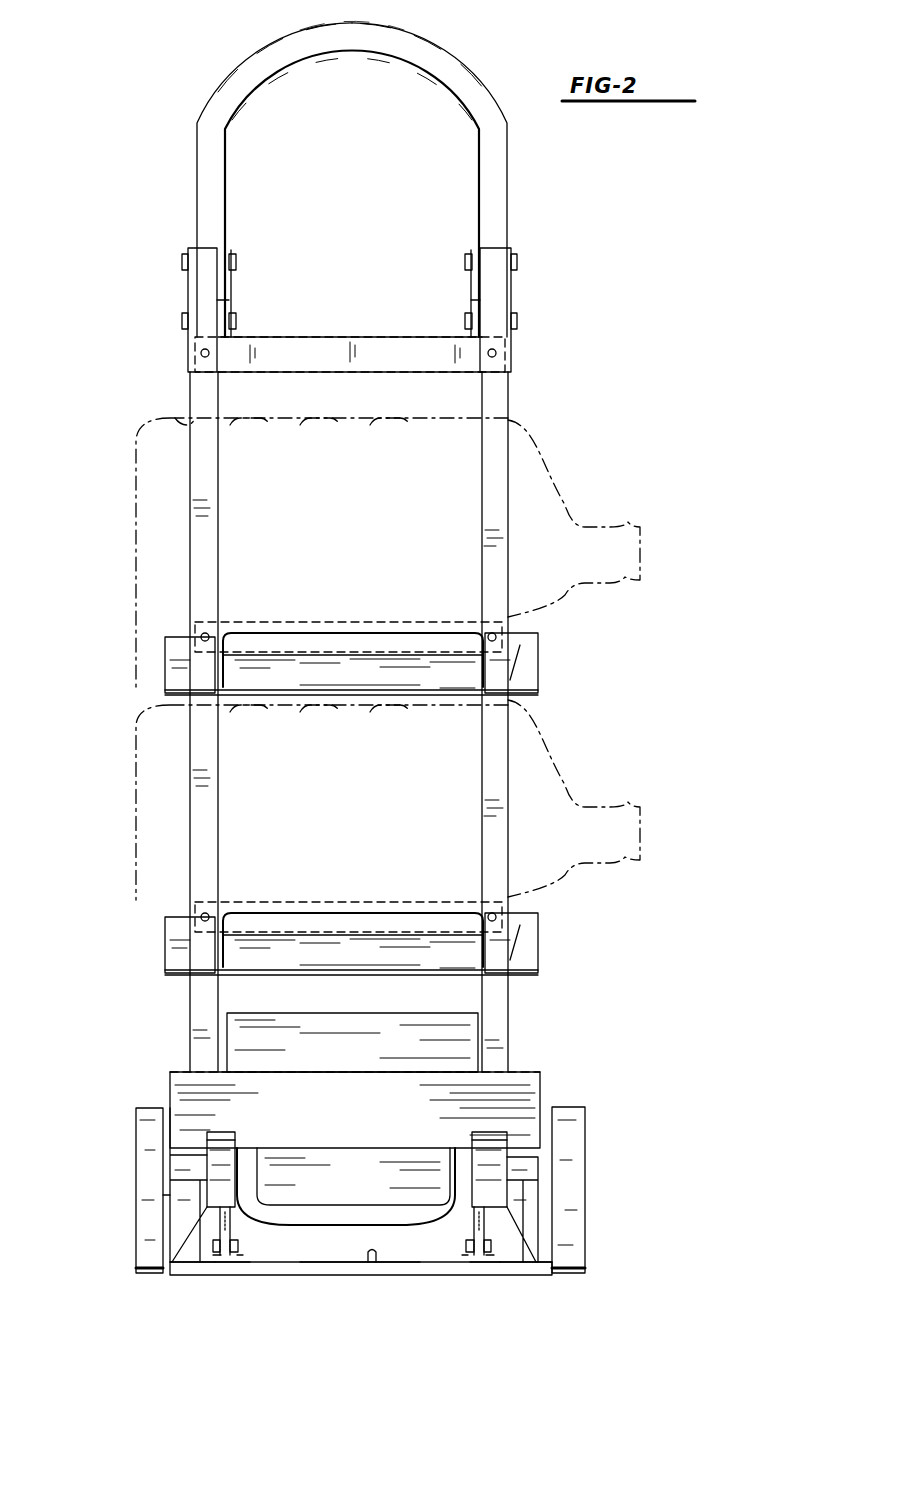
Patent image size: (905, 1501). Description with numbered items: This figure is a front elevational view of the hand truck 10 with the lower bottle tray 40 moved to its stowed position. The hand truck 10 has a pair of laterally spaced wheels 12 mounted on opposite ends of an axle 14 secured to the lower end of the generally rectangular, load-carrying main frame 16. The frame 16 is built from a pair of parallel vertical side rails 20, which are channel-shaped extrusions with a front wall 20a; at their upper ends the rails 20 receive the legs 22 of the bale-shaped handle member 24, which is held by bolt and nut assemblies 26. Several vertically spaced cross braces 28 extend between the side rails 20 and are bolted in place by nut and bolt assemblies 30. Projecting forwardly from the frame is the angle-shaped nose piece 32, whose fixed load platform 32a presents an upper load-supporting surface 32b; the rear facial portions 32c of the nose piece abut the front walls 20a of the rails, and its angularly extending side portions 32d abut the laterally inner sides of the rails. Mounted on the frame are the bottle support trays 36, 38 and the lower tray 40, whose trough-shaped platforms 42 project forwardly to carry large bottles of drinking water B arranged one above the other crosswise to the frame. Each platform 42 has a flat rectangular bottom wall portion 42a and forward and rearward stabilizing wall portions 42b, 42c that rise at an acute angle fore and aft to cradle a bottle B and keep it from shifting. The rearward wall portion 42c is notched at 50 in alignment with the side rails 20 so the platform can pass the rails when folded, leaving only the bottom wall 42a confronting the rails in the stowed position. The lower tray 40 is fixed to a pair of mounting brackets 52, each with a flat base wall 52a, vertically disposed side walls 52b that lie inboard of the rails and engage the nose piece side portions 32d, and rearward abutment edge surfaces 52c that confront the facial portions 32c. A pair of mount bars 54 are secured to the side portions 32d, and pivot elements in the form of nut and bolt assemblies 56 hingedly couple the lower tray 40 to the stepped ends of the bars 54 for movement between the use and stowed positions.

The hand truck 10 is at (147, 138).
The wheels 12 is at (140, 1265).
The axle 14 is at (160, 1195).
The main frame 16 is at (172, 268).
The side rails 20 is at (512, 275).
The front wall 20a is at (500, 328).
The legs 22 is at (222, 308).
The handle member 24 is at (407, 24).
The bolt and nut assemblies 26 is at (235, 262).
The cross braces 28 is at (348, 345).
The nut and bolt assemblies 30 is at (203, 356).
The nose piece 32 is at (290, 1280).
The load platform 32a is at (340, 1270).
The load-supporting surface 32b is at (372, 1262).
The rear facial portions 32c is at (170, 1280).
The side portions 32d is at (225, 1268).
The bottle support tray 36 is at (280, 630).
The bottle support tray 38 is at (280, 905).
The lower bottle tray 40 is at (175, 1085).
The platforms 42 is at (410, 640).
The bottom wall portion 42a is at (330, 690).
The forward stabilizing wall portion 42b is at (408, 686).
The rearward stabilizing wall portion 42c is at (525, 672).
The notch 50 is at (490, 670).
The mounting brackets 52 is at (507, 1145).
The base walls 52a is at (225, 1140).
The side walls 52b is at (235, 1215).
The rearward abutment edge surfaces 52c is at (90, 1248).
The mount bars 54 is at (215, 1250).
The nut and bolt assemblies 56 is at (240, 1270).
The bottles B is at (546, 478).